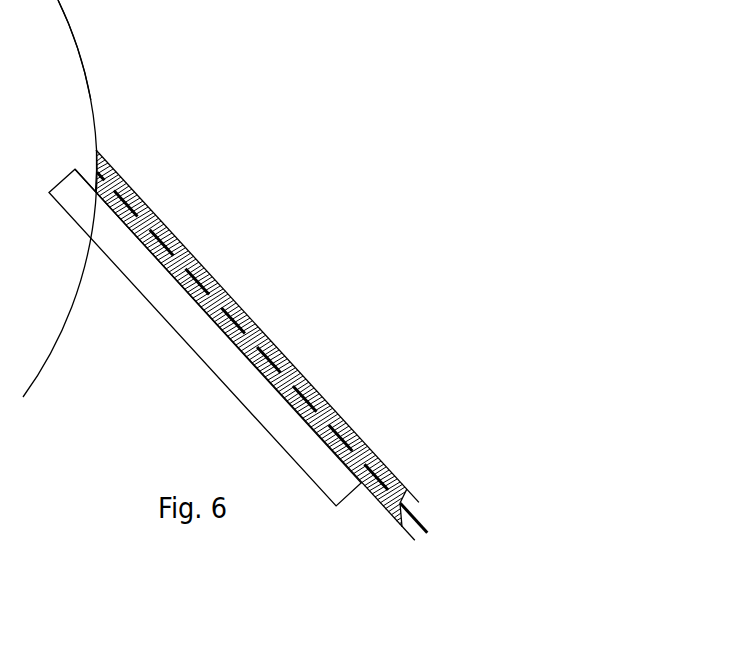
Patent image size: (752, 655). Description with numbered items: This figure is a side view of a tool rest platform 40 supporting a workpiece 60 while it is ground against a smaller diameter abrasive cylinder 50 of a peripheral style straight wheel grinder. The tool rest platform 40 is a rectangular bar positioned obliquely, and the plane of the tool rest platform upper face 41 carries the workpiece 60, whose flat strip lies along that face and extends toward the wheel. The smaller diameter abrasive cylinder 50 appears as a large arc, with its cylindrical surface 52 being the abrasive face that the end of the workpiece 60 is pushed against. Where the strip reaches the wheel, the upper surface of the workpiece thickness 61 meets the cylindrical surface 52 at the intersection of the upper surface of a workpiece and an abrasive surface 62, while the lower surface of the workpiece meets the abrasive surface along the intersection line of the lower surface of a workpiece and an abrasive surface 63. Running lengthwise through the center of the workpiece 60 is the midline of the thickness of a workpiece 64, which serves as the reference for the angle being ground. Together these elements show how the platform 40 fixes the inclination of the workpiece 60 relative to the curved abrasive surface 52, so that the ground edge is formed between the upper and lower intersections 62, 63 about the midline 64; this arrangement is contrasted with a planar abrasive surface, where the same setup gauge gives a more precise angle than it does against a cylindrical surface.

The tool rest platform 40 is at (247, 380).
The plane of the tool rest platform upper face 41 is at (233, 337).
The smaller diameter abrasive cylinder 50 is at (50, 270).
The cylindrical surface of a smaller diameter abrasive cylinder 52 is at (47, 45).
The workpiece being ground 60 is at (222, 293).
The upper surface of workpiece thickness 61 is at (162, 222).
The intersection of the upper surface of a workpiece and an abrasive surface 62 is at (97, 150).
The intersection line of the lower surface of a workpiece and an abrasive surface 63 is at (116, 178).
The midline of the thickness of a workpiece 64 is at (286, 354).